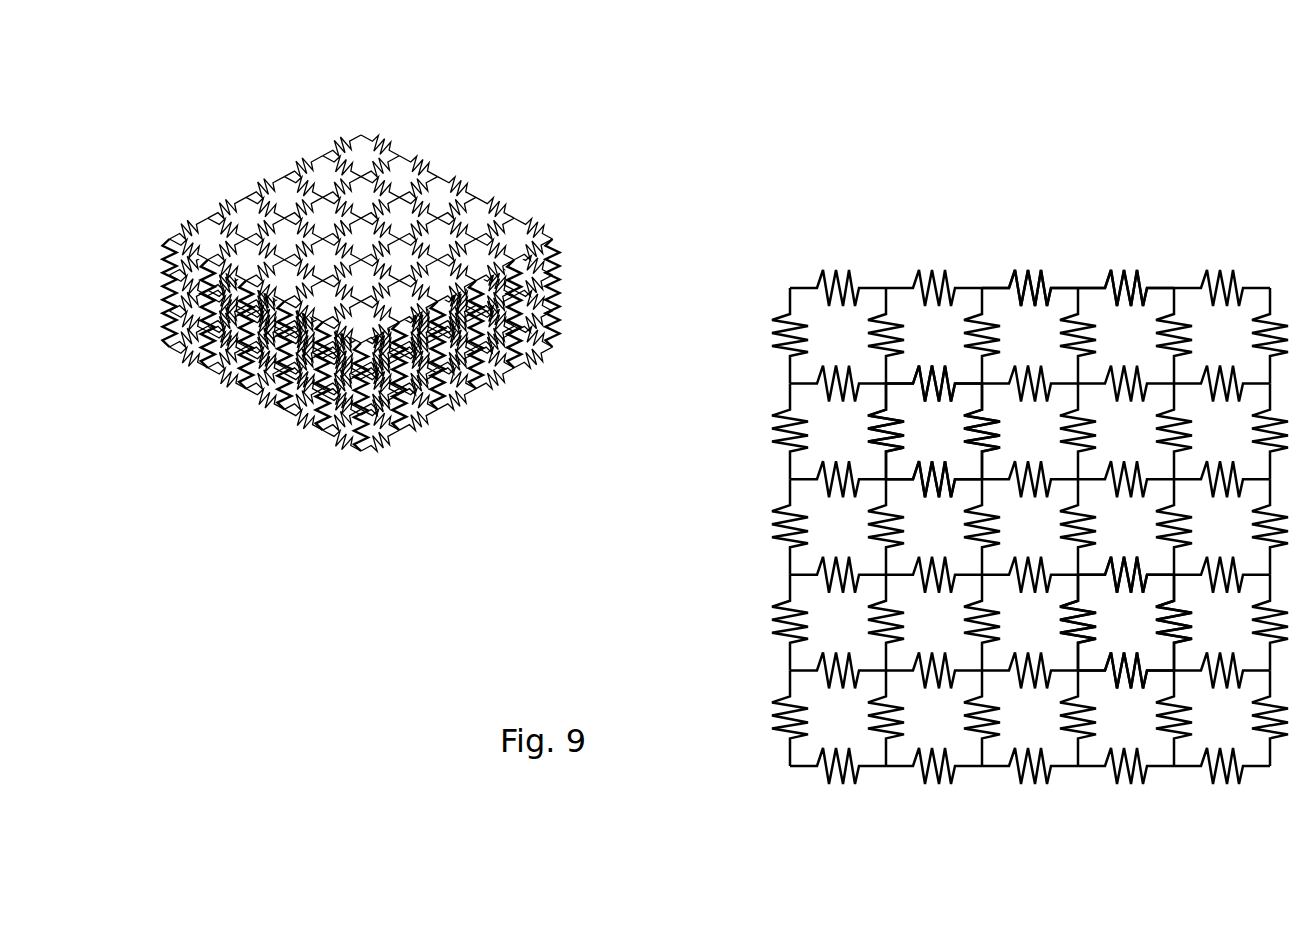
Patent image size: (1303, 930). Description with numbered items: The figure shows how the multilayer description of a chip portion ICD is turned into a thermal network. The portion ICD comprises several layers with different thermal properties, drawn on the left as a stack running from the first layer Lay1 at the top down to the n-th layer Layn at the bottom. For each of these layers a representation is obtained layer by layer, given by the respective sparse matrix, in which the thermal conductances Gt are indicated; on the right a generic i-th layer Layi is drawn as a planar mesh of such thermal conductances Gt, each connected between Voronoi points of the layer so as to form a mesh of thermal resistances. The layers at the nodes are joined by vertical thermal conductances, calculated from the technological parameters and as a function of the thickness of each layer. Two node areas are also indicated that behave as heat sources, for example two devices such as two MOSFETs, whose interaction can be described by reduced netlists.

The thermal conductance Gt is at (1113, 270).
The first layer Lay1 is at (402, 239).
The n-th layer Layn is at (402, 347).
The i-th layer Layi is at (972, 442).
The portion of the substrate of a chip ICD is at (255, 378).